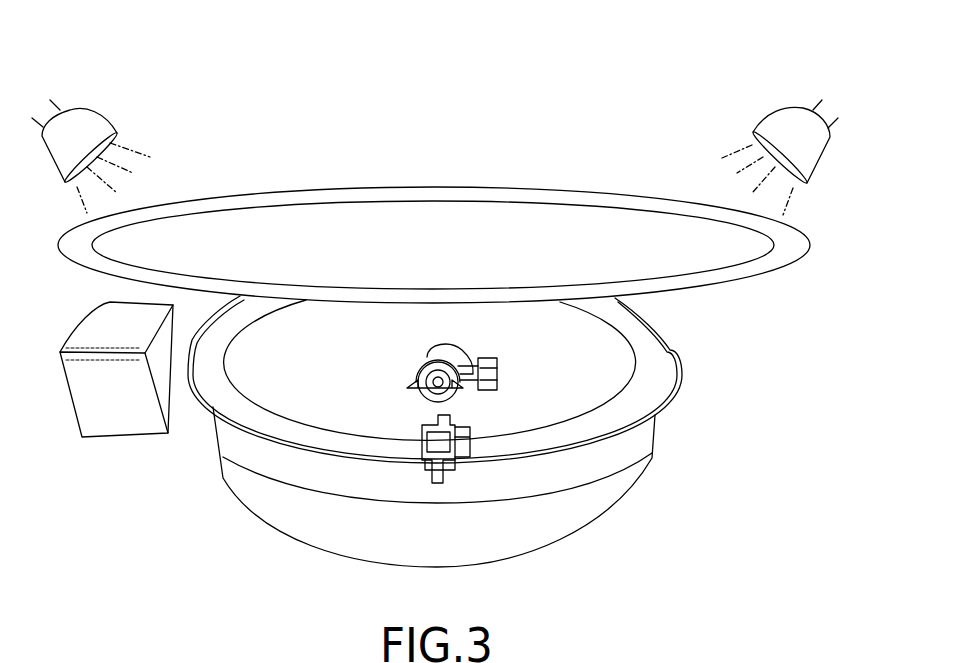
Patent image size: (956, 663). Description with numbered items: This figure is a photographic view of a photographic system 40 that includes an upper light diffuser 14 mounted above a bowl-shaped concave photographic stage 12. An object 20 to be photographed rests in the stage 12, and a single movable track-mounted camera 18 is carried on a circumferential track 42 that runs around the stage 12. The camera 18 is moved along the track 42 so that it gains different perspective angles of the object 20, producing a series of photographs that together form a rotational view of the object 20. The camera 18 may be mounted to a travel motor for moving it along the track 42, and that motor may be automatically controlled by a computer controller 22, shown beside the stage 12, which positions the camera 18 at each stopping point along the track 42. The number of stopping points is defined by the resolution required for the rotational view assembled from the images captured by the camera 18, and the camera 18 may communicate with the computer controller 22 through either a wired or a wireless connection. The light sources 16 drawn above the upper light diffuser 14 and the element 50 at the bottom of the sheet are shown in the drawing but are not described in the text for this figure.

The bowl-shaped concave photographic stage 12 is at (451, 431).
The upper light diffuser 14 is at (292, 232).
The light source 16 is at (92, 132).
The camera 18 is at (395, 445).
The object 20 is at (493, 383).
The computer controller 22 is at (130, 405).
The photographic system 40 is at (109, 75).
The track 42 is at (667, 387).
The base 50 is at (74, 652).